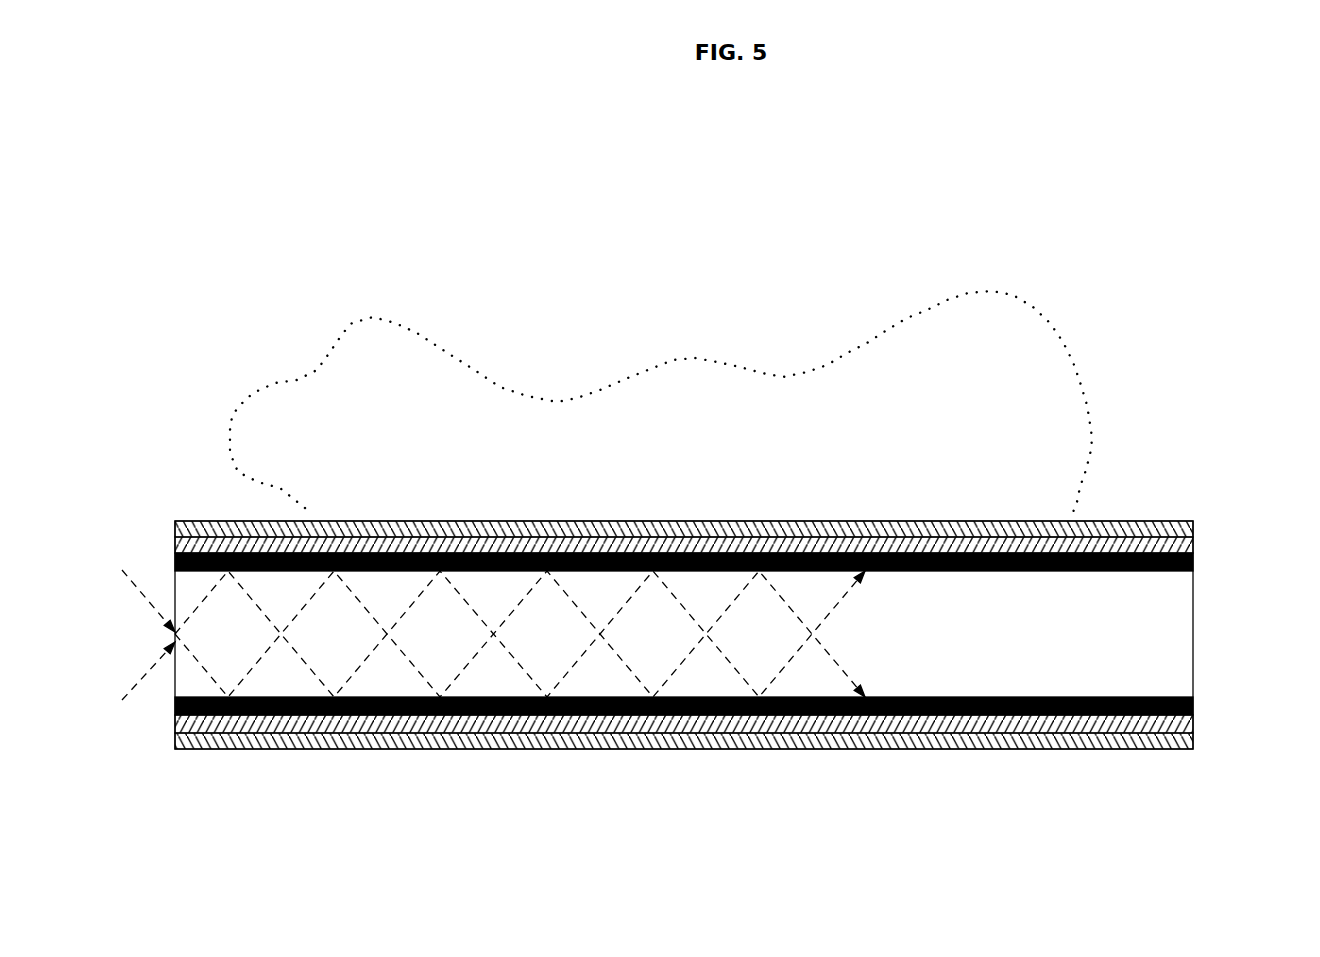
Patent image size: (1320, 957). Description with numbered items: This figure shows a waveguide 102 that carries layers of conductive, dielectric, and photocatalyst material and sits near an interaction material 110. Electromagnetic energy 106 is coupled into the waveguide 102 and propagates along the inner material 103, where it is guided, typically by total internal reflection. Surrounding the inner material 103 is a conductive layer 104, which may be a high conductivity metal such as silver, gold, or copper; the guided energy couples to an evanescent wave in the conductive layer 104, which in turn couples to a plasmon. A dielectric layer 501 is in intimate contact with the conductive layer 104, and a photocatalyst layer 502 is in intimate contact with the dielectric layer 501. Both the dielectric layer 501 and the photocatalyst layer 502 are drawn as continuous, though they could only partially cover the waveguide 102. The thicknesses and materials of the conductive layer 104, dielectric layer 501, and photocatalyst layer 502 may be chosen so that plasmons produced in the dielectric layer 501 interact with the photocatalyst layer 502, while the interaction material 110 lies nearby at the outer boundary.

The waveguide 102 is at (1193, 632).
The inner material 103 is at (1050, 651).
The conductive layer 104 is at (1193, 557).
The electromagnetic energy 106 is at (140, 676).
The interaction material 110 is at (447, 452).
The dielectric layer 501 is at (175, 548).
The photocatalyst layer 502 is at (1158, 521).